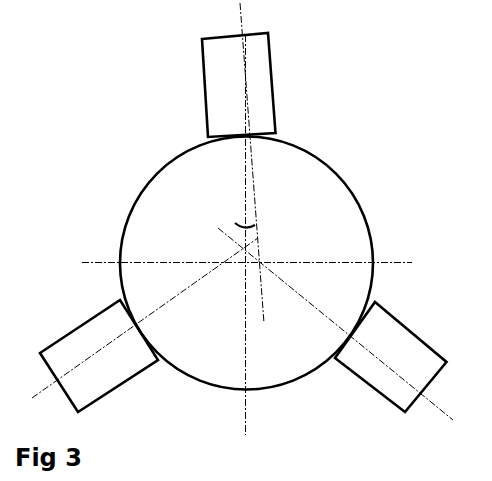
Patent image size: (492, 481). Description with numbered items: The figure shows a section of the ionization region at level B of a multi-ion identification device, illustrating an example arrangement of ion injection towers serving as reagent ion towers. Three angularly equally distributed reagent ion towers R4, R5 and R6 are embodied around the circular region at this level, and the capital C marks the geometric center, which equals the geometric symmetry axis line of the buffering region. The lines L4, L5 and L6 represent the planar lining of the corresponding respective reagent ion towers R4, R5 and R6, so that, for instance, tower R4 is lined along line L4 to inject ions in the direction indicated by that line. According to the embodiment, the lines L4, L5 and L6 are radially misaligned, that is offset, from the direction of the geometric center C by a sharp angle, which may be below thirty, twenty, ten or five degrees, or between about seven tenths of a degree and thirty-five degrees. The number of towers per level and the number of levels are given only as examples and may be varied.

The level B is at (96, 107).
The reagent ion tower R4 is at (391, 357).
The reagent ion tower R5 is at (99, 356).
The reagent ion tower R6 is at (239, 85).
The line L4 is at (344, 324).
The line L5 is at (144, 333).
The line L6 is at (238, 163).
The geometric center C is at (247, 235).